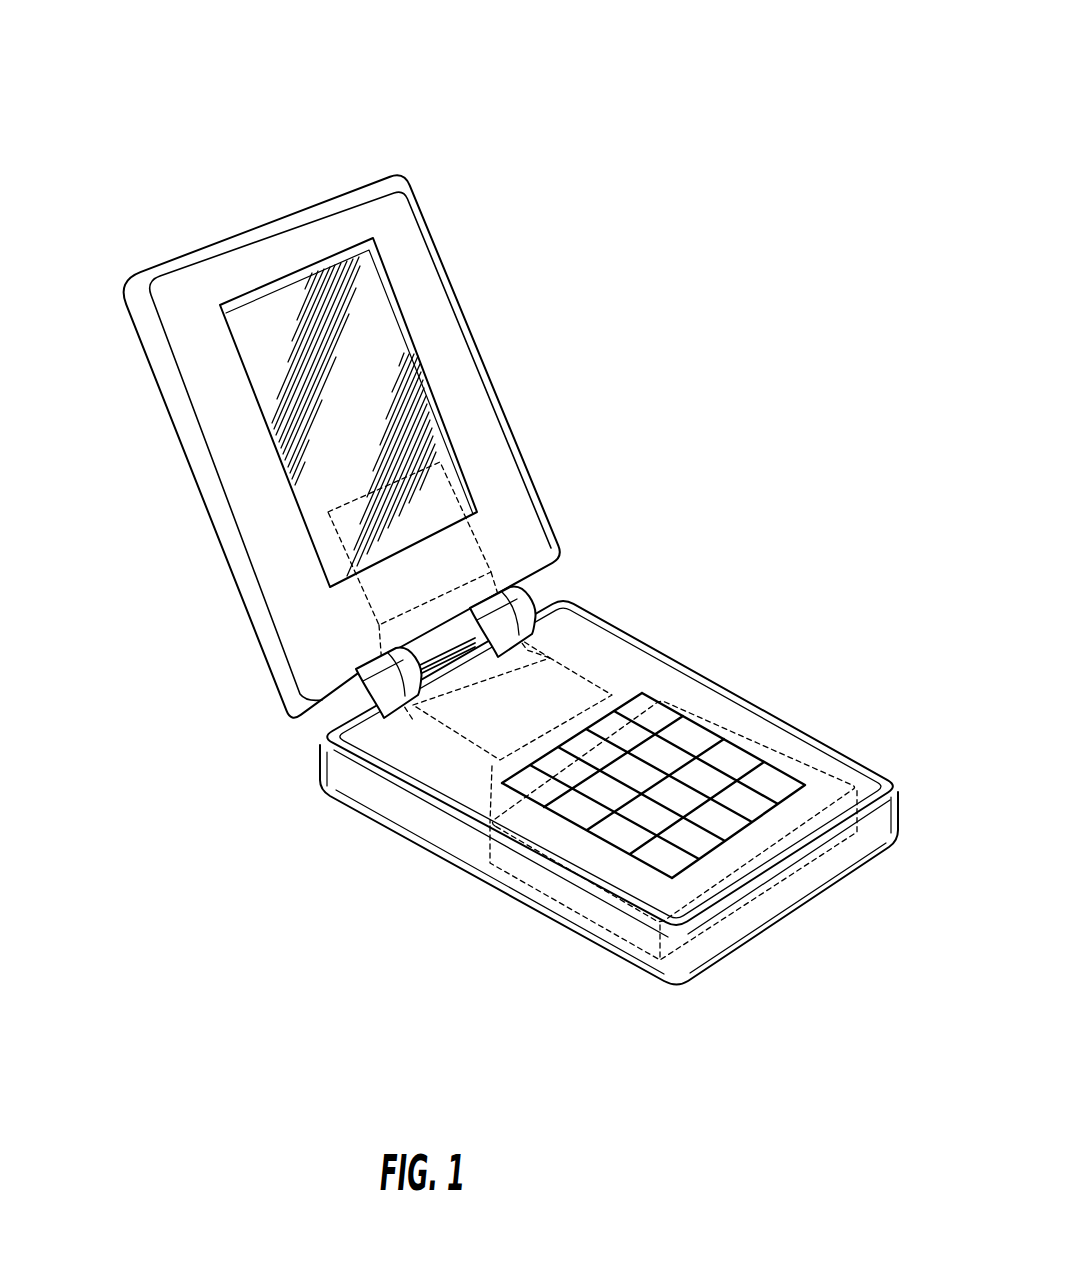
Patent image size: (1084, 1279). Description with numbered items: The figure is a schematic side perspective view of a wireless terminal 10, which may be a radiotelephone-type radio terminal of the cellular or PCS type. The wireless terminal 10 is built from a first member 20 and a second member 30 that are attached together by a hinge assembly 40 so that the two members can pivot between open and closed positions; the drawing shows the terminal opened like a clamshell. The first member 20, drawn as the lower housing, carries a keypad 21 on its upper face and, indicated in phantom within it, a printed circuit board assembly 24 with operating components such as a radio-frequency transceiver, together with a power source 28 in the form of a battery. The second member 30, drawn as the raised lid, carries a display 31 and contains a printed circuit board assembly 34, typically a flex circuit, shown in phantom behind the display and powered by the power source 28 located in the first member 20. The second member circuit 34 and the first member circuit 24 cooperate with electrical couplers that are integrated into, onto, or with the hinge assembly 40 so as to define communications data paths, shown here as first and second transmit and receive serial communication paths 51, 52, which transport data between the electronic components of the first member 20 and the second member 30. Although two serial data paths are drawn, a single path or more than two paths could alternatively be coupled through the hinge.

The wireless terminal 10 is at (343, 133).
The first member 20 is at (710, 922).
The keypad 21 is at (657, 755).
The printed circuit board assembly 24 is at (492, 766).
The power source 28 is at (648, 945).
The second member 30 is at (387, 210).
The display 31 is at (402, 353).
The printed circuit board assembly 34 is at (372, 598).
The hinge assembly 40 is at (302, 750).
The serial communication path 51 is at (363, 690).
The serial communication path 52 is at (502, 592).